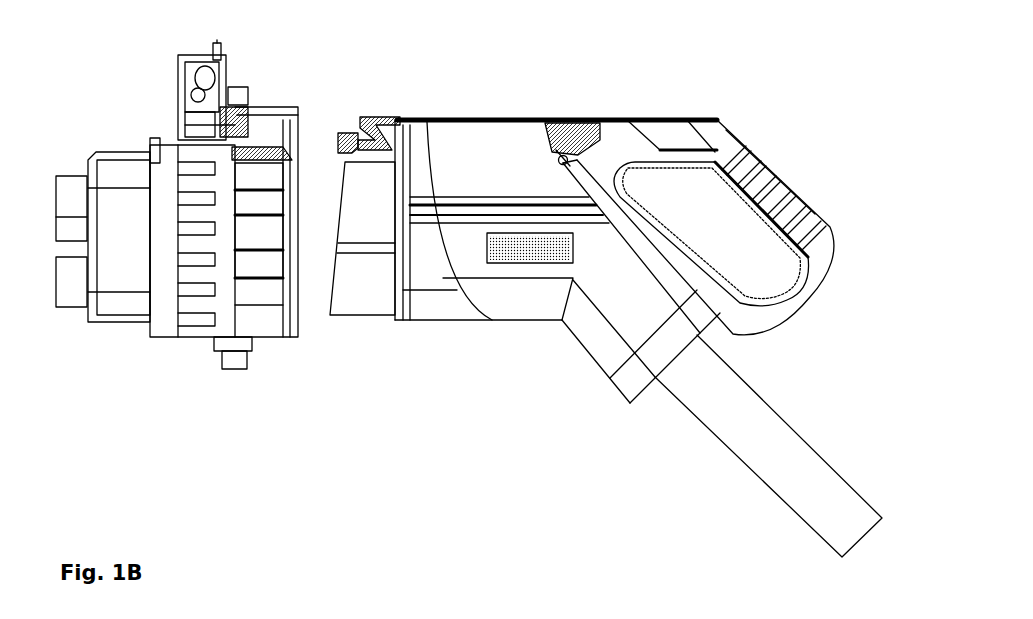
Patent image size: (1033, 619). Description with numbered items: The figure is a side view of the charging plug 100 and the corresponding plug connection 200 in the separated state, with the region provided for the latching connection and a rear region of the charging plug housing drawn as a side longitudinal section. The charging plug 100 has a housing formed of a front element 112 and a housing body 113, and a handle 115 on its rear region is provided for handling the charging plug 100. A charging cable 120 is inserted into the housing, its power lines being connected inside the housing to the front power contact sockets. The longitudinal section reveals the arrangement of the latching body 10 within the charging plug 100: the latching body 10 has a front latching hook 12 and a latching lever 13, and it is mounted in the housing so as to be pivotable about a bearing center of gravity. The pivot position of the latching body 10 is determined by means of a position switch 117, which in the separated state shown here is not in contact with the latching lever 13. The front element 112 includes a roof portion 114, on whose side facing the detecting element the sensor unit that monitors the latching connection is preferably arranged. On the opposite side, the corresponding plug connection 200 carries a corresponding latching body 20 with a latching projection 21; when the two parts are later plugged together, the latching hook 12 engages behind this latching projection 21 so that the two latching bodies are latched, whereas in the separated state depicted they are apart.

The corresponding plug connection 200 is at (76, 84).
The corresponding latching body 20 is at (257, 167).
The latching projection 21 is at (272, 147).
The charging plug 100 is at (847, 81).
The latching body 10 is at (370, 145).
The latching hook 12 is at (345, 135).
The roof portion 114 is at (383, 120).
The latching lever 13 is at (567, 145).
The position switch 117 is at (566, 157).
The handle 115 is at (777, 190).
The front element 112 is at (403, 315).
The housing body 113 is at (543, 307).
The charging cable 120 is at (740, 420).